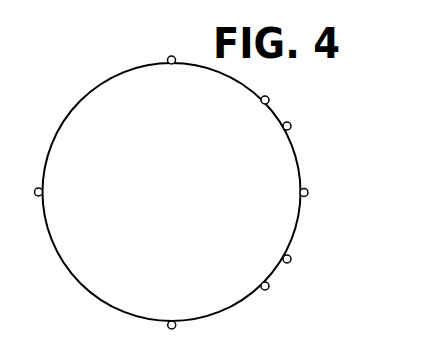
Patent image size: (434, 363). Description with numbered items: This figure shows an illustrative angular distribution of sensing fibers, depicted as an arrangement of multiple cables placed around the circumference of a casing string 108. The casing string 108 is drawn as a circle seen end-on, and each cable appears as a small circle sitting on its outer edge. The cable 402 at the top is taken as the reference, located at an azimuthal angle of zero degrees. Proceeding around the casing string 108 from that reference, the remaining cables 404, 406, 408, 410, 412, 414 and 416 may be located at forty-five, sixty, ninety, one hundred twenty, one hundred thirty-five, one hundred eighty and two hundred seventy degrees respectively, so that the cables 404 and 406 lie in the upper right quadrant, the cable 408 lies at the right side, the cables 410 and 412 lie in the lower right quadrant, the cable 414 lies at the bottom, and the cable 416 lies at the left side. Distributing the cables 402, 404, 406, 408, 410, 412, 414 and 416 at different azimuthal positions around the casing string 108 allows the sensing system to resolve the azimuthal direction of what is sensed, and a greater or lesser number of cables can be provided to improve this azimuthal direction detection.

The casing string 108 is at (80, 103).
The cable 402 is at (168, 67).
The cable 404 is at (262, 100).
The cable 406 is at (283, 127).
The cable 408 is at (300, 192).
The cable 410 is at (283, 257).
The cable 412 is at (263, 282).
The cable 414 is at (172, 320).
The cable 416 is at (44, 190).